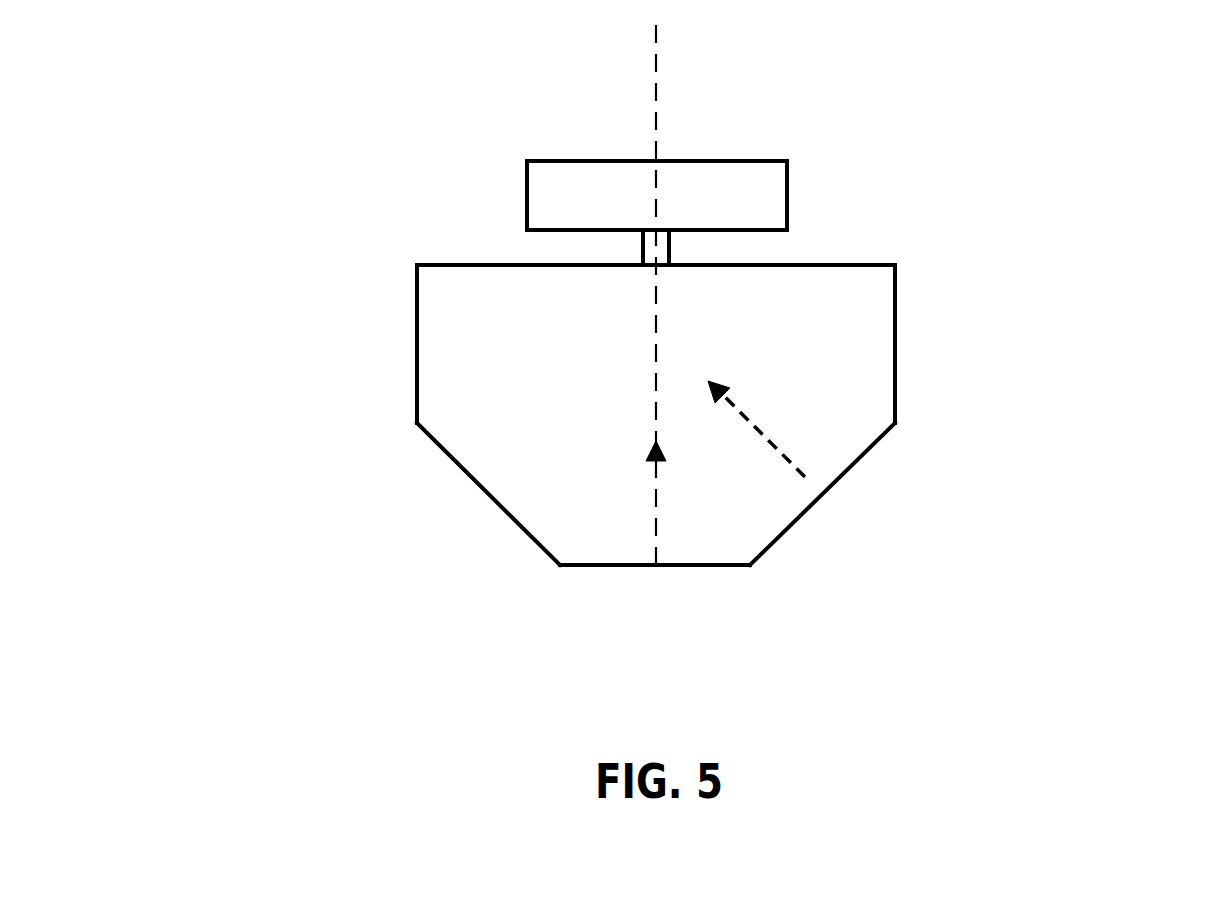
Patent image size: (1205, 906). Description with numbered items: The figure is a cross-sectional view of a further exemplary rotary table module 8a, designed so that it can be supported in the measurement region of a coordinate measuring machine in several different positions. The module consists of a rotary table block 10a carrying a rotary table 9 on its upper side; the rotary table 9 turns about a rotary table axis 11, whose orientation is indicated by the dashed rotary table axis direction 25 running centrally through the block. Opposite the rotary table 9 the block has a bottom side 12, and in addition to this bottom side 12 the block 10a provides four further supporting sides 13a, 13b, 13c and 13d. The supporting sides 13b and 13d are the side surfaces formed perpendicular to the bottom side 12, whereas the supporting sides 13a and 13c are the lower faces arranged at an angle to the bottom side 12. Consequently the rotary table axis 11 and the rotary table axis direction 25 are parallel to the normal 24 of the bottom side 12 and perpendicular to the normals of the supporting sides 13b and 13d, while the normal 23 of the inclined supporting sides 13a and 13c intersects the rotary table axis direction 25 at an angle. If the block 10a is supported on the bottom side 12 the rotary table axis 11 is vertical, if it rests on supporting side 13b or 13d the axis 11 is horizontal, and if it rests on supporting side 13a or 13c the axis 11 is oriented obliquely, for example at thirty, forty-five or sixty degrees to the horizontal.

The rotary table module 8a is at (958, 168).
The rotary table 9 is at (762, 188).
The rotary table block 10a is at (467, 318).
The rotary table axis 11 is at (669, 248).
The bottom side 12 is at (632, 566).
The supporting side 13a is at (857, 462).
The supporting side 13b is at (895, 340).
The supporting side 13c is at (478, 483).
The supporting side 13d is at (417, 348).
The normal of the supporting sides 13a and 13c 23 is at (775, 447).
The normal of the bottom side 24 is at (656, 508).
The rotary table axis direction 25 is at (657, 98).